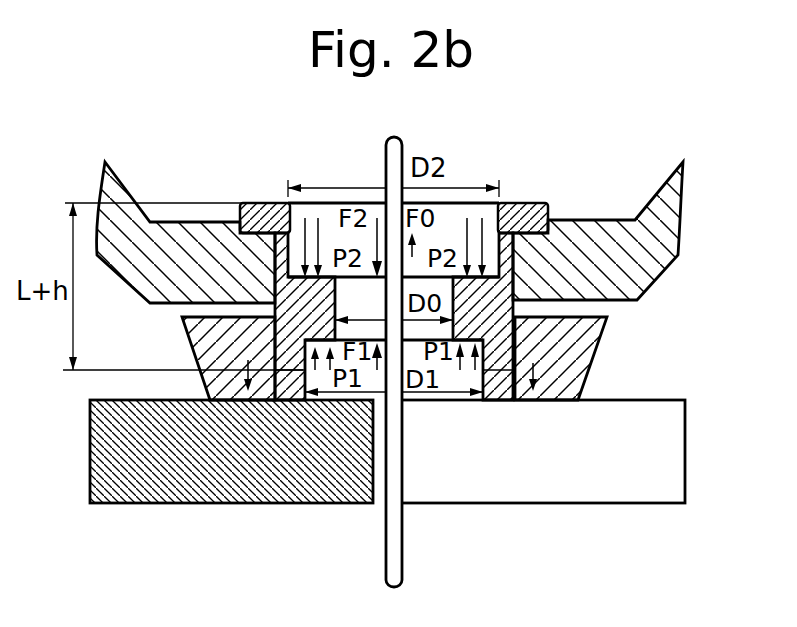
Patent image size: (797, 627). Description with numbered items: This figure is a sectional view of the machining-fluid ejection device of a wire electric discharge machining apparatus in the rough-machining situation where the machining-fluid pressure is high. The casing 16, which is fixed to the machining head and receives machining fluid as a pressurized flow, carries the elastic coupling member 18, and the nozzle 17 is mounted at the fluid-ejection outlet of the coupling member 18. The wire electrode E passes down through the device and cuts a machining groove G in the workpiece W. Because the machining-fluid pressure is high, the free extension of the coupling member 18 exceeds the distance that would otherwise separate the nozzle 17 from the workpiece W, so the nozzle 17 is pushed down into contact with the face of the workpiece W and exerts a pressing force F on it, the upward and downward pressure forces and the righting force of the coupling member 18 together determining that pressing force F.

The casing 16 is at (641, 273).
The nozzle 17 is at (582, 334).
The coupling member 18 is at (528, 212).
The workpiece W is at (212, 490).
The wire electrode E is at (403, 553).
The machining groove G is at (447, 487).
The pressing force F is at (538, 367).